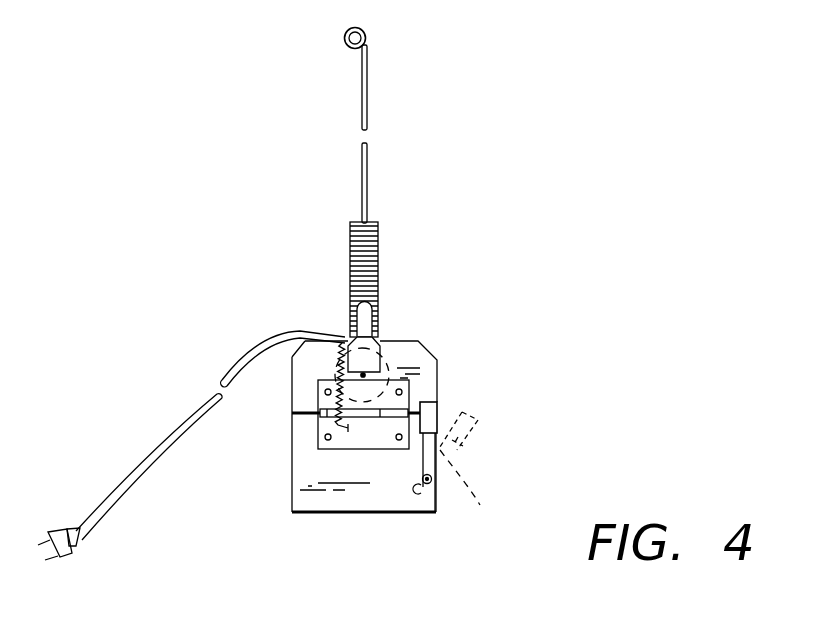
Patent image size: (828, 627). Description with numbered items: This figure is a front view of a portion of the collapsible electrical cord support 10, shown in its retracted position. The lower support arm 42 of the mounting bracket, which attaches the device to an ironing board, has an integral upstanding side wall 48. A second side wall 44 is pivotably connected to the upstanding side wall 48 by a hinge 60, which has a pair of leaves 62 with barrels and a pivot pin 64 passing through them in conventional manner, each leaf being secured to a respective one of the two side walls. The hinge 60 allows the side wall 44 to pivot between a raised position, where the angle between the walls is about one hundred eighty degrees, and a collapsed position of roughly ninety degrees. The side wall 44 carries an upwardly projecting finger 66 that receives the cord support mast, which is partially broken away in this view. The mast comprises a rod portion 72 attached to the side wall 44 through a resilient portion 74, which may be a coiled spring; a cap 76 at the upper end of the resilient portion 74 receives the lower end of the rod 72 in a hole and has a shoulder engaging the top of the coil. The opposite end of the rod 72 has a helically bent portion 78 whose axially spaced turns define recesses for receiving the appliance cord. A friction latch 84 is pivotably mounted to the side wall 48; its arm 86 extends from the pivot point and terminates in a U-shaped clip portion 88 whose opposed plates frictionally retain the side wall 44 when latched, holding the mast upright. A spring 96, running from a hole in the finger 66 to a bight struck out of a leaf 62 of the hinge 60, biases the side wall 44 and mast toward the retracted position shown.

The collapsible electrical cord support 10 is at (434, 405).
The lower support arm 42 is at (427, 498).
The side wall 44 is at (403, 357).
The upstanding side wall 48 is at (380, 495).
The hinge 60 is at (402, 405).
The leaves 62 is at (363, 440).
The pivot pin 64 is at (318, 418).
The finger 66 is at (362, 320).
The rod portion 72 is at (367, 100).
The resilient portion 74 is at (373, 272).
The cap 76 is at (372, 221).
The helically bent portion 78 is at (366, 40).
The friction latch 84 is at (435, 450).
The arm 86 is at (482, 506).
The clip portion 88 is at (437, 404).
The spring 96 is at (325, 375).